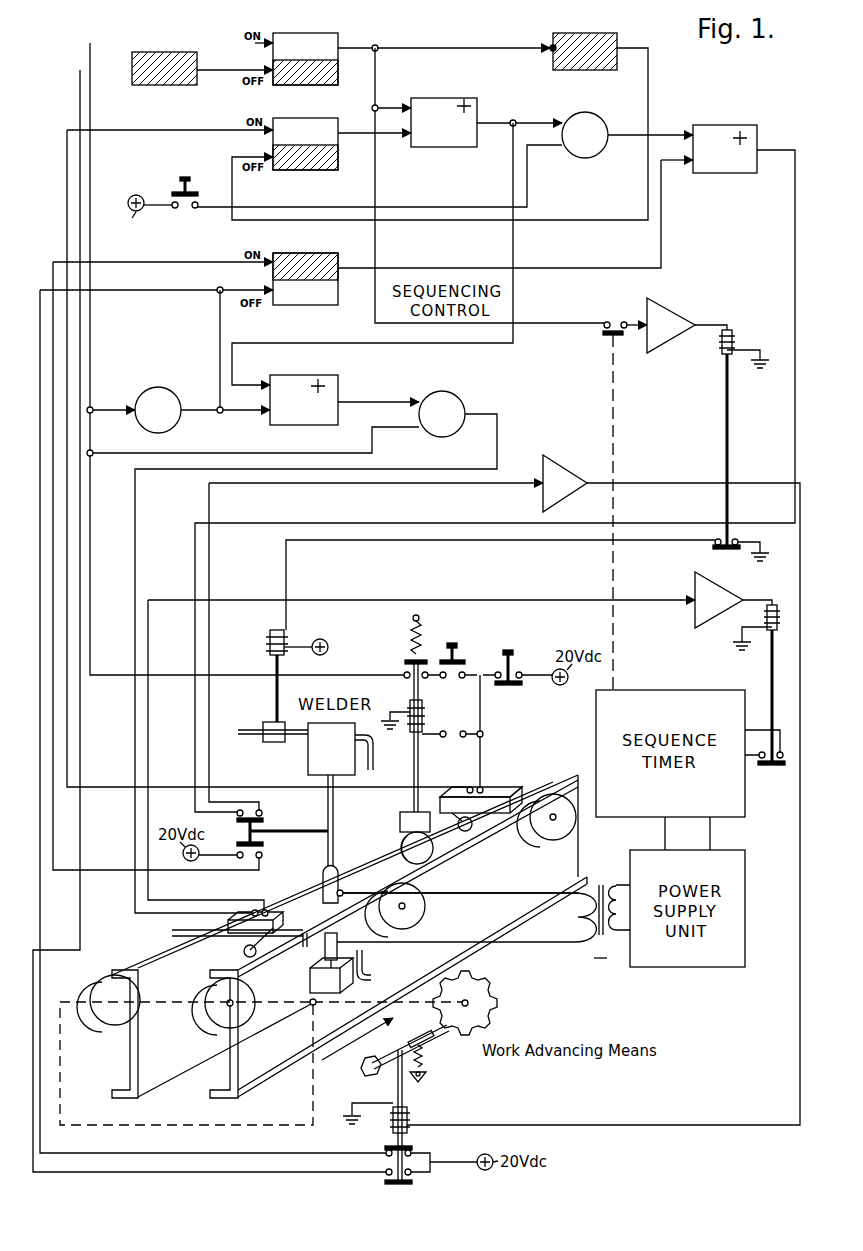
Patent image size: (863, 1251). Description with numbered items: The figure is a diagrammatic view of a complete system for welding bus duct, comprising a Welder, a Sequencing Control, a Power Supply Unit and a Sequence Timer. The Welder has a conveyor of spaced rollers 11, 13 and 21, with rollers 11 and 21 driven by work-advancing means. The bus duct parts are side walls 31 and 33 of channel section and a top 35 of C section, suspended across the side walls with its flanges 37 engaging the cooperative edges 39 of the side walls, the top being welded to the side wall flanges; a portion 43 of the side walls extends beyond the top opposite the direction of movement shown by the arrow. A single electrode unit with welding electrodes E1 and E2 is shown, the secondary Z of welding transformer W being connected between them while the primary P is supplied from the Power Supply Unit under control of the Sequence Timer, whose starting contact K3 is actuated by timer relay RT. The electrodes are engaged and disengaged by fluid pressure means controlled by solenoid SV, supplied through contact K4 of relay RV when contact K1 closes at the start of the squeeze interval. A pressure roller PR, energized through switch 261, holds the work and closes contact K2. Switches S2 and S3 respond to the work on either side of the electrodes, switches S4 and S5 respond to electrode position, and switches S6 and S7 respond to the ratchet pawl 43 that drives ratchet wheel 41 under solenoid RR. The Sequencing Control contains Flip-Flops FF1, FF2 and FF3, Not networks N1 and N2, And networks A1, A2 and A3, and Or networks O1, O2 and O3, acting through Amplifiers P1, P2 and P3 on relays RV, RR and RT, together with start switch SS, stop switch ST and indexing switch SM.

The Not network N1 is at (155, 86).
The Not network N2 is at (558, 33).
The Flip-Flop network FF1 is at (331, 37).
The Flip-Flop network FF2 is at (312, 255).
The Flip-Flop network FF3 is at (316, 121).
The And network A1 is at (450, 100).
The And network A2 is at (725, 127).
The And network A3 is at (312, 378).
The Or network O1 is at (594, 117).
The Or network O2 is at (459, 398).
The Or network O3 is at (160, 388).
The indexing switch SM is at (175, 192).
The contact K1 is at (612, 322).
The contact K2 is at (405, 669).
The contact K3 is at (783, 769).
The contact K4 is at (714, 545).
The Amplifier P1 is at (673, 316).
The Amplifier P2 is at (560, 468).
The Amplifier P3 is at (697, 617).
The relay RV is at (735, 343).
The timer relay RT is at (776, 604).
The solenoid RR is at (410, 1114).
The solenoid SV is at (270, 636).
The start switch SS is at (456, 650).
The stop switch ST is at (512, 661).
The pressure roller PR is at (423, 718).
The switch 261 is at (455, 738).
The switch S2 is at (272, 910).
The switch S3 is at (488, 786).
The switch S4 is at (262, 818).
The switch S5 is at (262, 848).
The switch S6 is at (412, 1150).
The switch S7 is at (414, 1181).
The welding electrode E1 is at (340, 872).
The welding electrode E2 is at (343, 942).
The secondary Z is at (589, 916).
The primary P is at (616, 885).
The welding transformer W is at (601, 950).
The roller 11 is at (238, 1012).
The roller 13 is at (548, 840).
The roller 21 is at (98, 1026).
The side wall 31 is at (247, 1062).
The side wall 33 is at (129, 1056).
The top 35 is at (192, 926).
The flange 37 is at (298, 945).
The edge 39 is at (110, 969).
The ratchet wheel 41 is at (178, 947).
The pawl 43 is at (167, 1068).